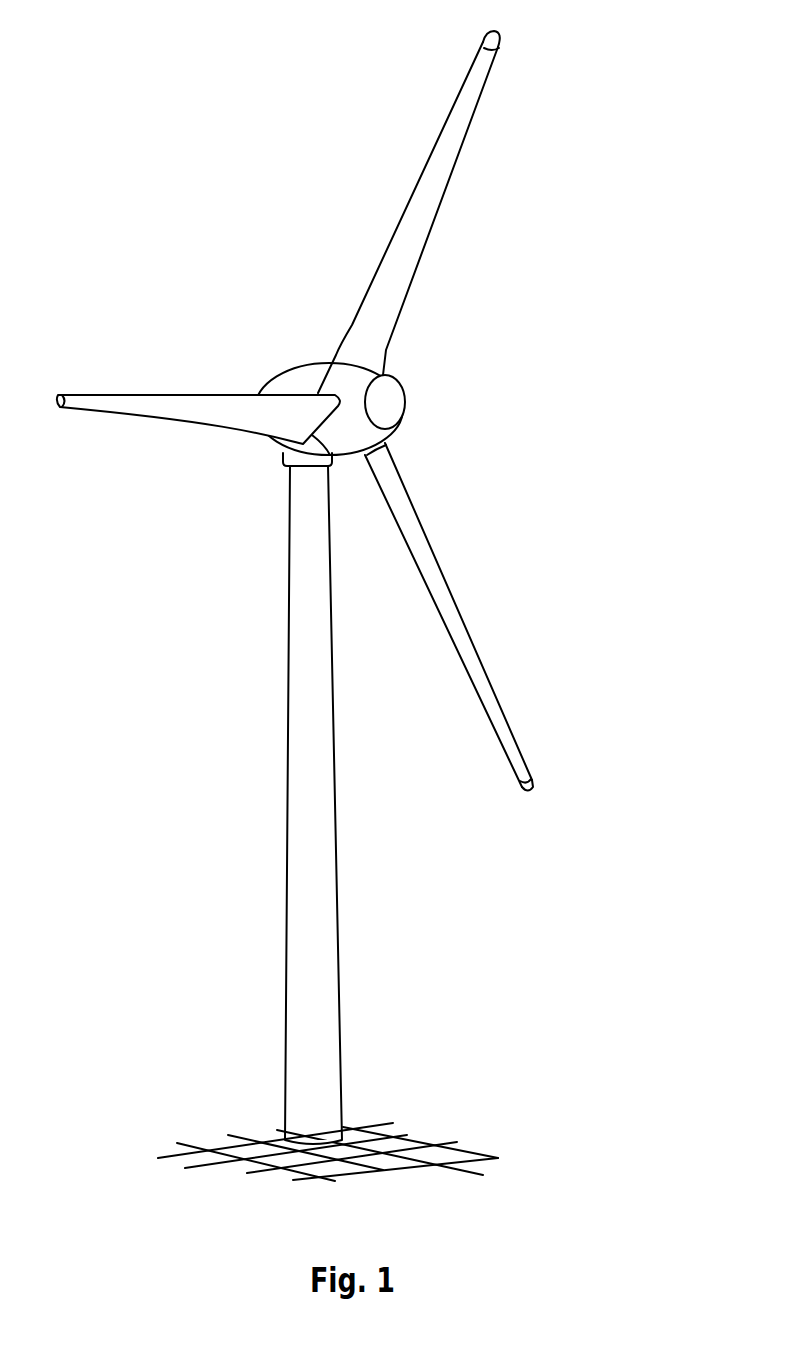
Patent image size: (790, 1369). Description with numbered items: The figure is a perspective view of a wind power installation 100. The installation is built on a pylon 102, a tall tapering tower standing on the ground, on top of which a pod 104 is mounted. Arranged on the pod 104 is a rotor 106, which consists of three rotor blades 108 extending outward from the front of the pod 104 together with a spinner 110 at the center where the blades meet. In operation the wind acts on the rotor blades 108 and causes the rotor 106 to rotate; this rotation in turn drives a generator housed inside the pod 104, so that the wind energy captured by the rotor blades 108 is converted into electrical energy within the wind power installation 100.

The wind power installation 100 is at (248, 531).
The pylon 102 is at (317, 908).
The pod 104 is at (308, 378).
The rotor 106 is at (472, 330).
The rotor blades 108 is at (128, 400).
The spinner 110 is at (393, 410).